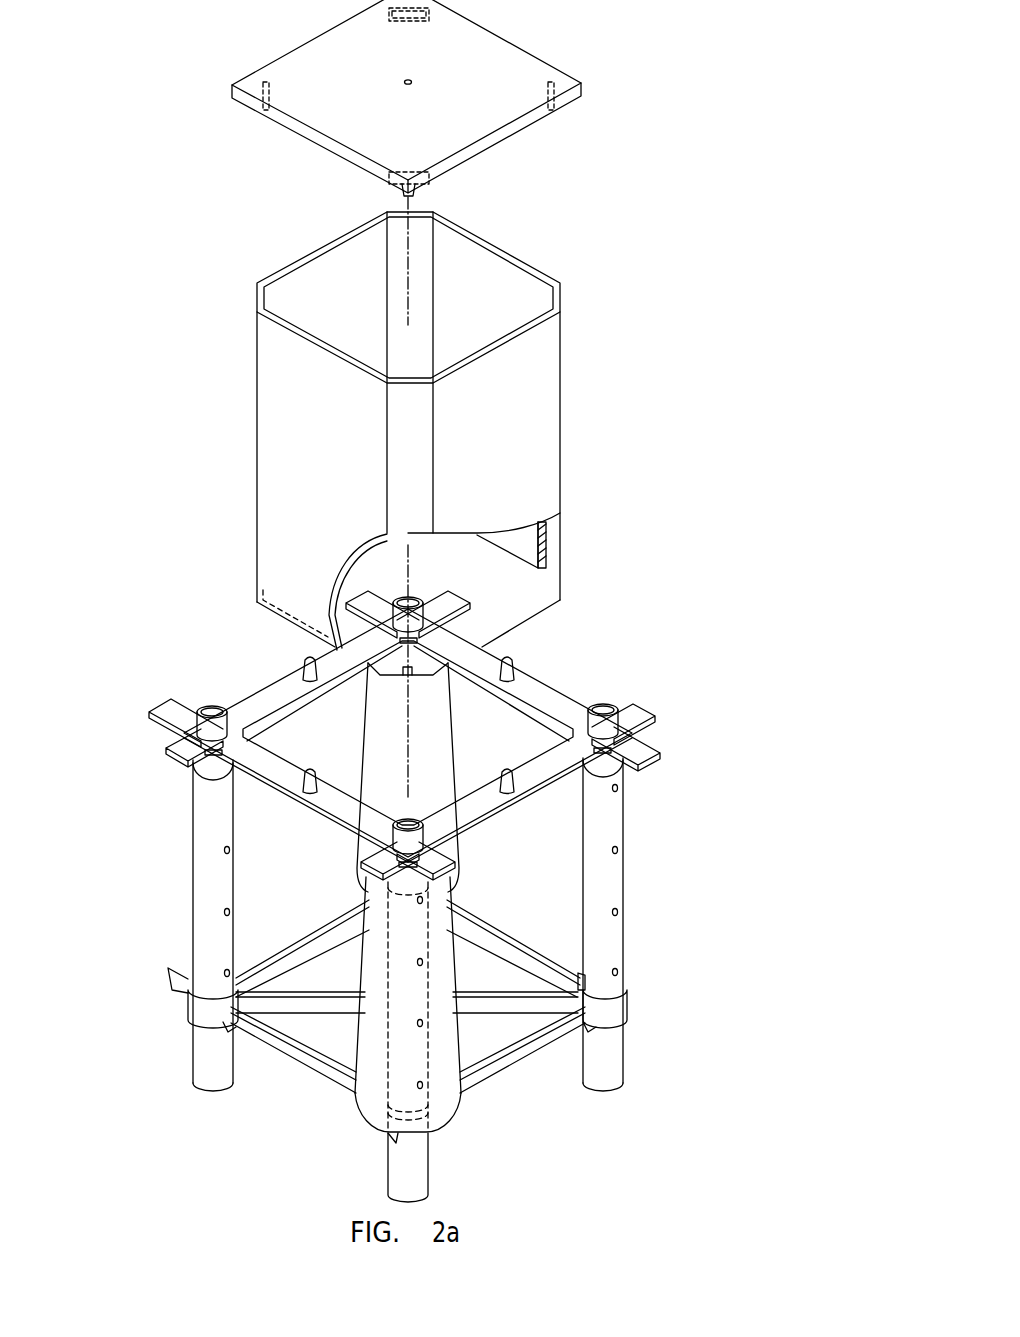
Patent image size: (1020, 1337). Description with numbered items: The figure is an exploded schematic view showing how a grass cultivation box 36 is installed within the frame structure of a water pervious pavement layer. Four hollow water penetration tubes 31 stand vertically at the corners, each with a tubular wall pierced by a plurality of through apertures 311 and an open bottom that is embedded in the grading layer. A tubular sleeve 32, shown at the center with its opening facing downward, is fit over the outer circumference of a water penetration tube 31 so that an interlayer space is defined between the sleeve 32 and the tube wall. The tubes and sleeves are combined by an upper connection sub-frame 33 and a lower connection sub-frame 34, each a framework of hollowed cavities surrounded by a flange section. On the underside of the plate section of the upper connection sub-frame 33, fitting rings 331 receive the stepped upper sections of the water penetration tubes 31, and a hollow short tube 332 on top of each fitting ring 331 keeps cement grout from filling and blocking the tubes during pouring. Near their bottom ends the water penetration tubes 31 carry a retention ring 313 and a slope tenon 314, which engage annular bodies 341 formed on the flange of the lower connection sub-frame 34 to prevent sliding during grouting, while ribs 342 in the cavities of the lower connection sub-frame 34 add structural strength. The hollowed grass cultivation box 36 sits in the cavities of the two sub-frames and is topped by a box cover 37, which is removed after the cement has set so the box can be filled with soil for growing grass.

The water penetration tube 31 is at (202, 882).
The through apertures 311 is at (620, 850).
The retention ring 313 is at (613, 988).
The slope tenon 314 is at (587, 1028).
The tubular sleeve 32 is at (373, 1040).
The upper connection sub-frame 33 is at (545, 695).
The fitting ring 331 is at (607, 771).
The short tube 332 is at (603, 710).
The lower connection sub-frame 34 is at (493, 1068).
The annular body 341 is at (610, 1010).
The rib 342 is at (493, 997).
The grass cultivation box 36 is at (545, 421).
The box cover 37 is at (495, 57).